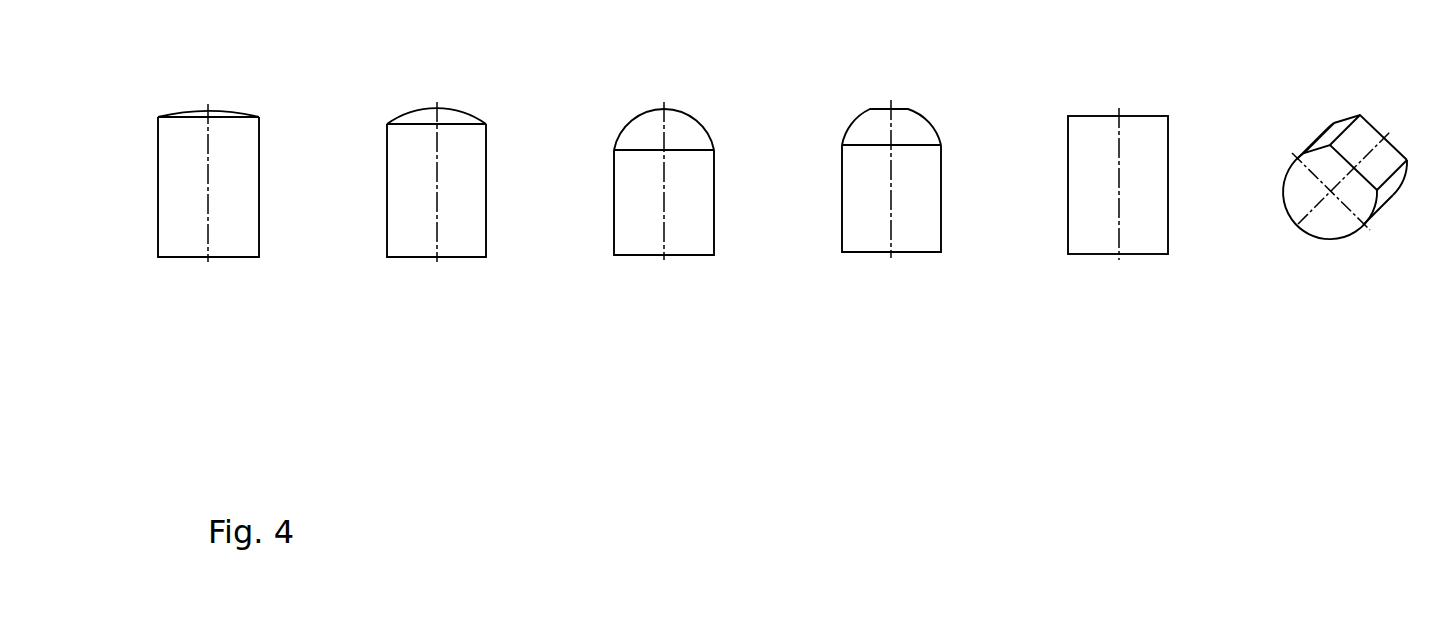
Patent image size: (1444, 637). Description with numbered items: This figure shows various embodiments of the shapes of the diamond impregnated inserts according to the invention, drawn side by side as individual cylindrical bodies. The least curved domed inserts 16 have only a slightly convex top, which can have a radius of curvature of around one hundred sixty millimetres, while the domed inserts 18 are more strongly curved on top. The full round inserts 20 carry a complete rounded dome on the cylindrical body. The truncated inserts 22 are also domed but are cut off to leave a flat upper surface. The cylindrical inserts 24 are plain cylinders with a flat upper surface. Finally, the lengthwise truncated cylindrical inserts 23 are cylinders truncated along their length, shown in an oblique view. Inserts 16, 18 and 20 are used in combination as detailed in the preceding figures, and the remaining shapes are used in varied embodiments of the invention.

The least curved domed insert 16 is at (183, 111).
The domed insert 18 is at (410, 112).
The full round insert 20 is at (637, 116).
The truncated insert 22 is at (864, 112).
The cylindrical insert 24 is at (1091, 116).
The lengthwise truncated cylindrical insert 23 is at (1318, 136).